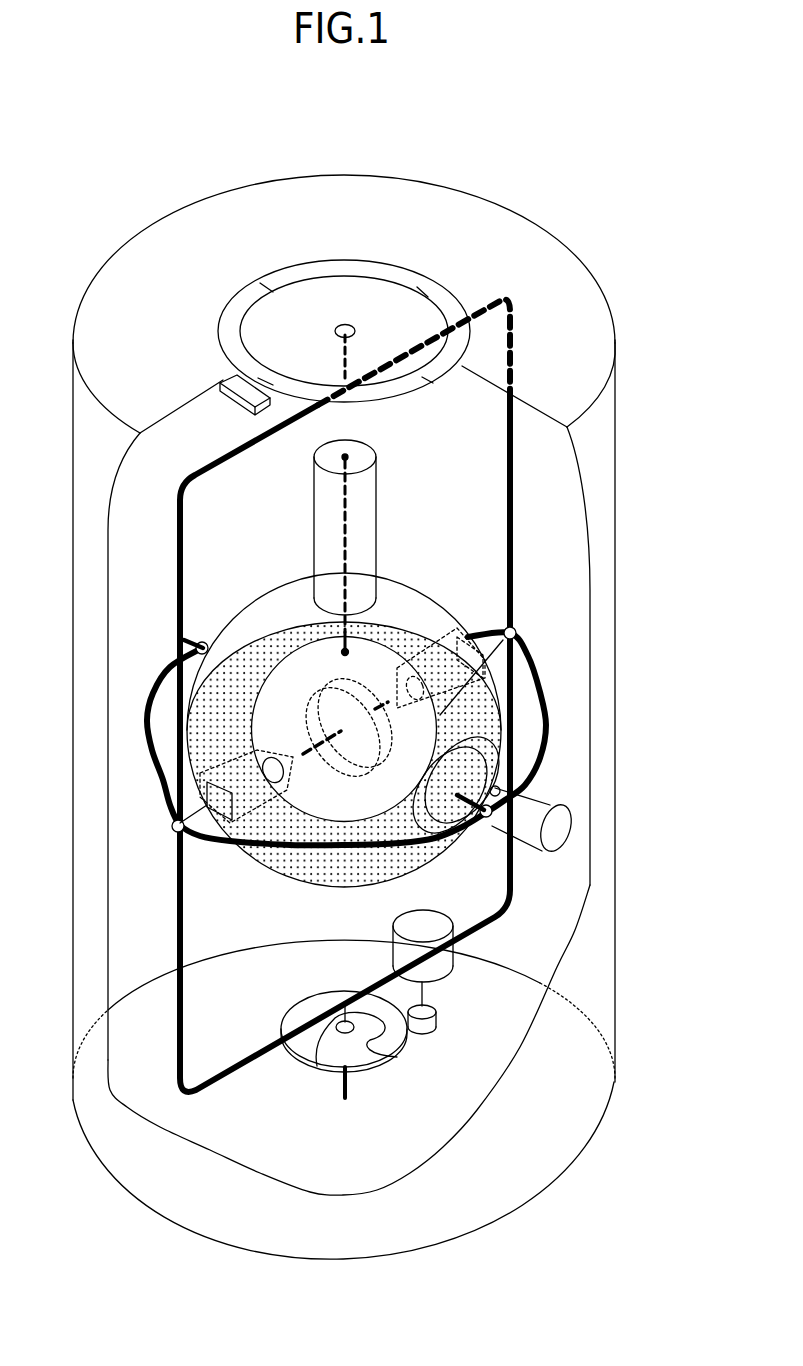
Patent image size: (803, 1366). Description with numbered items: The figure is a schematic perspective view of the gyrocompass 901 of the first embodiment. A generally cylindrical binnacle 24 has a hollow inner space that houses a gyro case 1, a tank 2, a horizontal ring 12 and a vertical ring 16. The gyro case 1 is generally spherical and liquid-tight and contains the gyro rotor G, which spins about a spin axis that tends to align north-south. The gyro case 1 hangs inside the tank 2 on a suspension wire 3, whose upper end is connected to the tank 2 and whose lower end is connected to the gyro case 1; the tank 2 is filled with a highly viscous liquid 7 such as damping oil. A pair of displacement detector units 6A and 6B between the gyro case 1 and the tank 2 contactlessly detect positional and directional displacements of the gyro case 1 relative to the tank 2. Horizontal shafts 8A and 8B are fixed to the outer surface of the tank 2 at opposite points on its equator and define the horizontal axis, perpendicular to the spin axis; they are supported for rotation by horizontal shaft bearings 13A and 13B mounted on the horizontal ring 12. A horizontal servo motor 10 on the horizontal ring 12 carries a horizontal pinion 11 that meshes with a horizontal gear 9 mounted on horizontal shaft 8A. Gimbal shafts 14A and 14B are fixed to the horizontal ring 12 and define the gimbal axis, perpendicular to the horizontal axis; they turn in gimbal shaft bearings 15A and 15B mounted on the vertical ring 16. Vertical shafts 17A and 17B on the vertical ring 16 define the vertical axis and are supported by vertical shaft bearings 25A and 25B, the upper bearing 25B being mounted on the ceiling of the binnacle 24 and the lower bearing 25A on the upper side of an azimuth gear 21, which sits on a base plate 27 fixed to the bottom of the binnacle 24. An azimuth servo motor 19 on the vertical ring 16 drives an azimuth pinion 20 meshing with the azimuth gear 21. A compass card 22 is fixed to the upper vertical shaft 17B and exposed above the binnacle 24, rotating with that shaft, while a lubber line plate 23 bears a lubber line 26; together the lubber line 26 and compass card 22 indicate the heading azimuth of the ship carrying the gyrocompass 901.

The gyro case 1 is at (379, 661).
The tank 2 is at (265, 592).
The suspension wire 3 is at (347, 530).
The displacement detector unit 6A is at (270, 826).
The displacement detector unit 6B is at (442, 639).
The highly viscous liquid 7 is at (344, 754).
The horizontal shaft 8A is at (472, 817).
The horizontal shaft 8B is at (185, 645).
The horizontal gear 9 is at (447, 841).
The horizontal servo motor 10 is at (560, 831).
The horizontal pinion 11 is at (498, 787).
The horizontal ring 12 is at (145, 722).
The horizontal shaft bearing 13A is at (485, 817).
The horizontal shaft bearing 13B is at (202, 642).
The gimbal shaft 14A is at (203, 811).
The gimbal shaft 14B is at (497, 654).
The gimbal shaft bearing 15A is at (175, 833).
The gimbal shaft bearing 15B is at (515, 629).
The vertical ring 16 is at (178, 941).
The vertical shaft 17A is at (367, 1048).
The vertical shaft 17B is at (335, 360).
The azimuth servo motor 19 is at (455, 961).
The azimuth pinion 20 is at (440, 1024).
The azimuth gear 21 is at (298, 1006).
The compass card 22 is at (368, 292).
The lubber line plate 23 is at (240, 407).
The binnacle 24 is at (568, 1162).
The vertical shaft bearing 25A is at (314, 1061).
The vertical shaft bearing 25B is at (343, 325).
The lubber line 26 is at (220, 384).
The base plate 27 is at (347, 1084).
The gyro rotor G is at (322, 681).
The gyrocompass 901 is at (112, 1218).